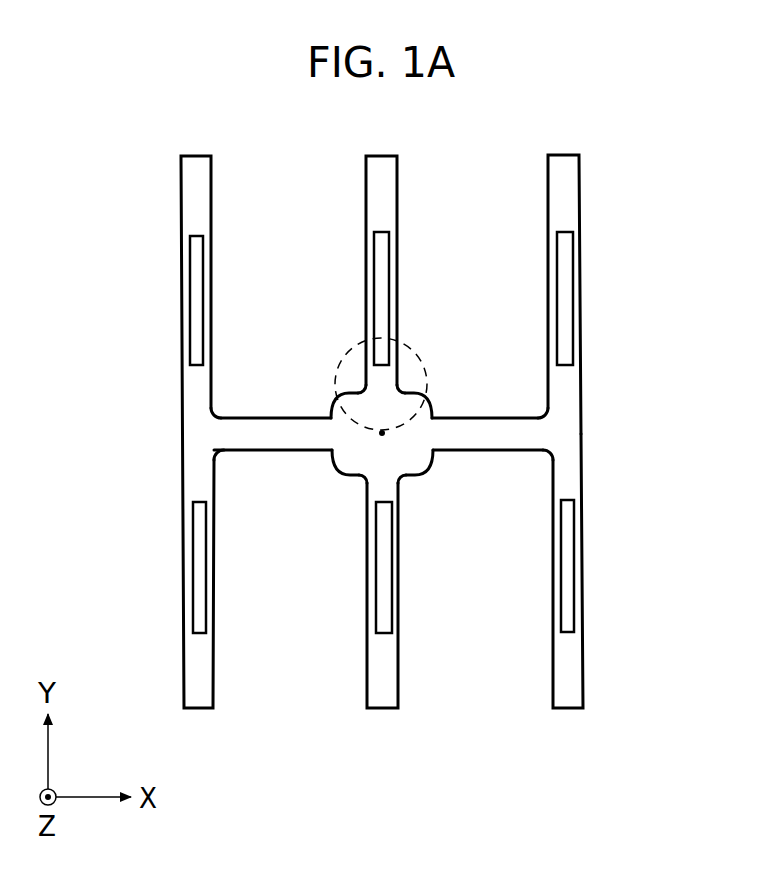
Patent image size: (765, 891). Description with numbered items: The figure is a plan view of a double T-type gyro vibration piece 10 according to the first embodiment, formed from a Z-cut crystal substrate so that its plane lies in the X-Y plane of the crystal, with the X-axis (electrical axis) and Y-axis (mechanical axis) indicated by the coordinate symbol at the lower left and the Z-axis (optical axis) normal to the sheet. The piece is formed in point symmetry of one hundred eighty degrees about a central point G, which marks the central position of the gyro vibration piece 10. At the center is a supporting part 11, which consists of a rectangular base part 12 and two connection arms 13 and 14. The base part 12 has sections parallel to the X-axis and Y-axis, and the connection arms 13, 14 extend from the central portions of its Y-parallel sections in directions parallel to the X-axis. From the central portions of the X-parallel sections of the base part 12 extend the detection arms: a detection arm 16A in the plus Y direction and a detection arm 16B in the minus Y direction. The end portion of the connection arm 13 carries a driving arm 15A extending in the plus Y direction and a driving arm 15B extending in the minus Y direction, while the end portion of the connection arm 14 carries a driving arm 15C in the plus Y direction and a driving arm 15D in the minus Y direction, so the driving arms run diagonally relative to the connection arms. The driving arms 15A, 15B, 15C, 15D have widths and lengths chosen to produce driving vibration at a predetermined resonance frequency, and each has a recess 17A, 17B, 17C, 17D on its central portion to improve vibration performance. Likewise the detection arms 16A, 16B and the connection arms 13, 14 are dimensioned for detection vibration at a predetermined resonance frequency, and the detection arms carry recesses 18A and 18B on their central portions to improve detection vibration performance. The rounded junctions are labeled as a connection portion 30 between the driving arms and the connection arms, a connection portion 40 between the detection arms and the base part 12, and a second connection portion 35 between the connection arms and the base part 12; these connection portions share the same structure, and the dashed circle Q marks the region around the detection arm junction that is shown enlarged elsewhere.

The gyro vibration piece 10 is at (486, 133).
The supporting part 11 is at (287, 451).
The base part 12 is at (415, 433).
The connection arm 13 is at (490, 428).
The connection arm 14 is at (270, 431).
The driving arm 15A is at (565, 208).
The driving arm 15B is at (572, 658).
The driving arm 15C is at (198, 212).
The driving arm 15D is at (203, 659).
The detection arm 16A is at (386, 212).
The detection arm 16B is at (390, 658).
The recess 17A is at (565, 276).
The recess 17B is at (572, 593).
The recess 17C is at (198, 278).
The recess 17D is at (203, 593).
The recess 18A is at (386, 276).
The recess 18B is at (390, 593).
The connection portion 30 is at (224, 410).
The second connection portion 35 is at (330, 409).
The connection portion 40 is at (359, 385).
The central point G is at (382, 451).
The part Q is at (359, 334).